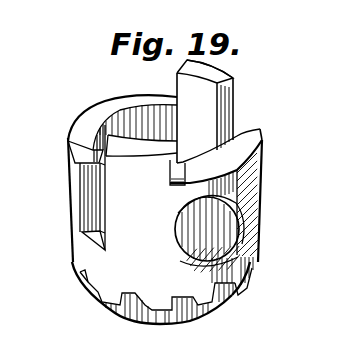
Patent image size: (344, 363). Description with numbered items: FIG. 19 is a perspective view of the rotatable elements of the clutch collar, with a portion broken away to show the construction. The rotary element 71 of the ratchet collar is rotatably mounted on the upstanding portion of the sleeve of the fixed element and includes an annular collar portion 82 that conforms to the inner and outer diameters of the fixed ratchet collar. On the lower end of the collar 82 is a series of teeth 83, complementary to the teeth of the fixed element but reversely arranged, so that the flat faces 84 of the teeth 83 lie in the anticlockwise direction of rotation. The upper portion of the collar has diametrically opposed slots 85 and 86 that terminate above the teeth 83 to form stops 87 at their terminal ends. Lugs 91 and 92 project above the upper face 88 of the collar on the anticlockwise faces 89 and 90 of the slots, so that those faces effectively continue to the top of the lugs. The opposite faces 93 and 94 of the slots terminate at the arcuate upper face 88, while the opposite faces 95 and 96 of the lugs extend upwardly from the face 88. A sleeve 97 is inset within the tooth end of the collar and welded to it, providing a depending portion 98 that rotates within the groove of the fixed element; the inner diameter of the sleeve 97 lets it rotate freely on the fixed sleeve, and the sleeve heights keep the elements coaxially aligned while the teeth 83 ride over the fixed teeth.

The rotary element 71 is at (261, 208).
The annular collar portion 82 is at (73, 193).
The teeth 83 is at (212, 310).
The flat faces 84 is at (160, 318).
The slot 85 is at (82, 220).
The slot 86 is at (240, 126).
The stops 87 is at (83, 238).
The upper face 88 is at (97, 108).
The anticlockwise face 89 is at (108, 197).
The anticlockwise face 90 is at (226, 131).
The lug 91 is at (95, 150).
The lug 92 is at (203, 88).
The opposite face 93 is at (82, 171).
The opposite face 94 is at (256, 130).
The opposite face of lug 95 is at (170, 169).
The opposite face of lug 96 is at (177, 73).
The sleeve 97 is at (230, 230).
The depending portion 98 is at (140, 321).